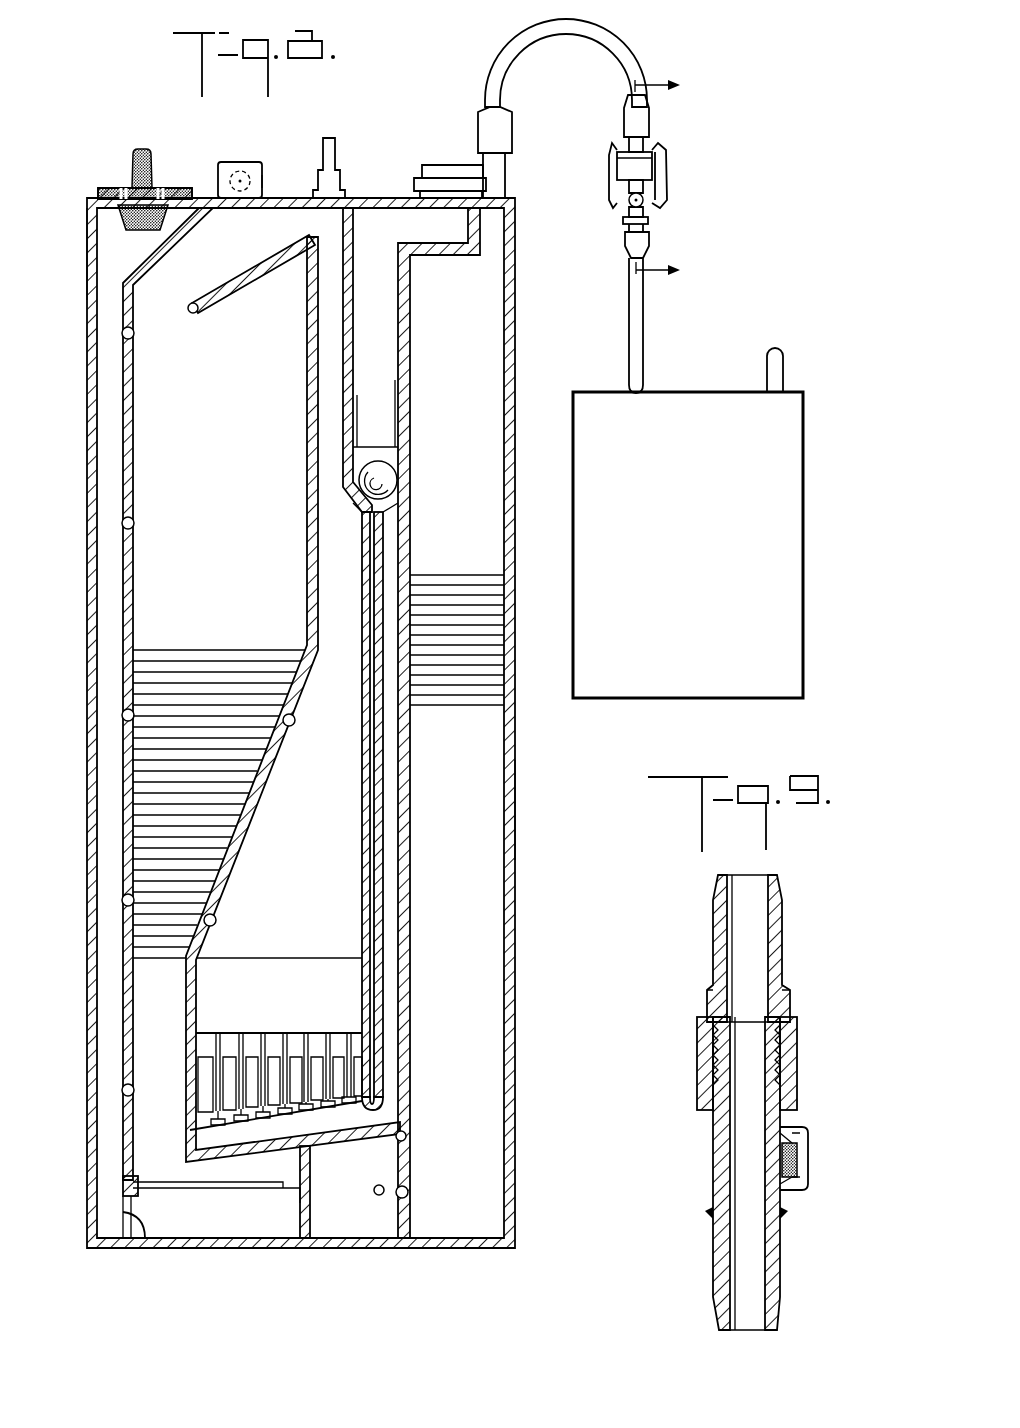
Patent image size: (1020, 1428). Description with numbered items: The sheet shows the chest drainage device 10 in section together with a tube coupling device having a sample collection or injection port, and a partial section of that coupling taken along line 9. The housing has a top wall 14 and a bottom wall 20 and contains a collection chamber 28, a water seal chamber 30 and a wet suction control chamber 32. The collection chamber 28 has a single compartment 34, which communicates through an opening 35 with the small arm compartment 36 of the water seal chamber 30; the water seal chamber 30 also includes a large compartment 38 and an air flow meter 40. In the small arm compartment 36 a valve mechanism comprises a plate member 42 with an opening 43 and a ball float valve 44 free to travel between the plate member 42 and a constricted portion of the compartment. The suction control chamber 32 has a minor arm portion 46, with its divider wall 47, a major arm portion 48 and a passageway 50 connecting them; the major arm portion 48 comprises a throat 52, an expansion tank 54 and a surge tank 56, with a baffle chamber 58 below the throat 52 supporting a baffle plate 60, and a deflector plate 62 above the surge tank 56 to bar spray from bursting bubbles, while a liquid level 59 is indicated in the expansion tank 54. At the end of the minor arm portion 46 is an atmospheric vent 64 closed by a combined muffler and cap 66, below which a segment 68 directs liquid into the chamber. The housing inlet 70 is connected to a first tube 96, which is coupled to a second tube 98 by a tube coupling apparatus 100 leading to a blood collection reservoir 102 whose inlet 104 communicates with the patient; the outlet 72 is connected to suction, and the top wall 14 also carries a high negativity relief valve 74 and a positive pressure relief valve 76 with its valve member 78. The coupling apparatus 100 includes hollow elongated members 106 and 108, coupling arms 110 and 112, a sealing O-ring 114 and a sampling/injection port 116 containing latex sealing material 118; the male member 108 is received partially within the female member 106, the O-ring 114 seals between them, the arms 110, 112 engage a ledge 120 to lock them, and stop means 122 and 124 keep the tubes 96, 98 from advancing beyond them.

In FIG. 8, the chest drainage device 10 is at (86, 117).
In FIG. 8, the top wall 14 is at (372, 198).
In FIG. 8, the bottom wall 20 is at (322, 1246).
In FIG. 8, the collection chamber 28 is at (522, 816).
In FIG. 8, the water seal chamber 30 is at (410, 1032).
In FIG. 8, the wet suction control chamber 32 is at (86, 718).
In FIG. 8, the compartment 34 is at (471, 886).
In FIG. 8, the opening 35 is at (462, 216).
In FIG. 8, the small arm compartment 36 is at (402, 769).
In FIG. 8, the large compartment 38 is at (307, 886).
In FIG. 8, the air flow meter 40 is at (183, 1107).
In FIG. 8, the plate member 42 is at (400, 445).
In FIG. 8, the opening 43 is at (368, 447).
In FIG. 8, the ball float valve 44 is at (400, 474).
In FIG. 8, the minor arm portion 46 is at (105, 819).
In FIG. 8, the divider wall 47 is at (136, 370).
In FIG. 8, the major arm portion 48 is at (148, 599).
In FIG. 8, the passageway 50 is at (127, 1248).
In FIG. 8, the throat 52 is at (167, 1046).
In FIG. 8, the expansion tank 54 is at (215, 776).
In FIG. 8, the surge tank 56 is at (240, 463).
In FIG. 8, the baffle chamber 58 is at (225, 1234).
In FIG. 8, the liquid level 59 is at (210, 648).
In FIG. 8, the baffle plate 60 is at (266, 1195).
In FIG. 8, the deflector plate 62 is at (223, 301).
In FIG. 8, the atmospheric vent 64 is at (83, 189).
In FIG. 8, the combined muffler and cap 66 is at (153, 190).
In FIG. 8, the segment 68 is at (100, 256).
In FIG. 8, the inlet 70 is at (506, 178).
In FIG. 8, the outlet 72 is at (337, 152).
In FIG. 8, the high negativity relief valve 74 is at (426, 165).
In FIG. 8, the positive pressure relief valve 76 is at (241, 163).
In FIG. 8, the valve member 78 is at (256, 190).
In FIG. 8, the first tube 96 is at (615, 36).
In FIG. 8, the second tube 98 is at (645, 342).
In FIG. 8, the tube coupling apparatus 100 is at (663, 244).
In FIG. 9, the tube coupling apparatus 100 is at (747, 1102).
In FIG. 8, the blood collection reservoir 102 is at (714, 530).
In FIG. 8, the inlet 104 is at (785, 380).
In FIG. 9, the hollow elongated member 106 is at (784, 948).
In FIG. 9, the hollow elongated member 108 is at (782, 1270).
In FIG. 8, the coupling arm 110 is at (620, 179).
In FIG. 8, the coupling arm 112 is at (660, 190).
In FIG. 9, the sealing O-ring 114 is at (702, 1065).
In FIG. 8, the sampling/injection port 116 is at (628, 205).
In FIG. 9, the sampling/injection port 116 is at (800, 1138).
In FIG. 9, the latex sealing material 118 is at (798, 1160).
In FIG. 9, the ledge 120 is at (695, 1014).
In FIG. 8, the stop means 122 is at (628, 150).
In FIG. 9, the stop means 122 is at (705, 983).
In FIG. 8, the stop means 124 is at (650, 214).
In FIG. 9, the stop means 124 is at (707, 1212).
In FIG. 8, the section line 9 is at (667, 177).